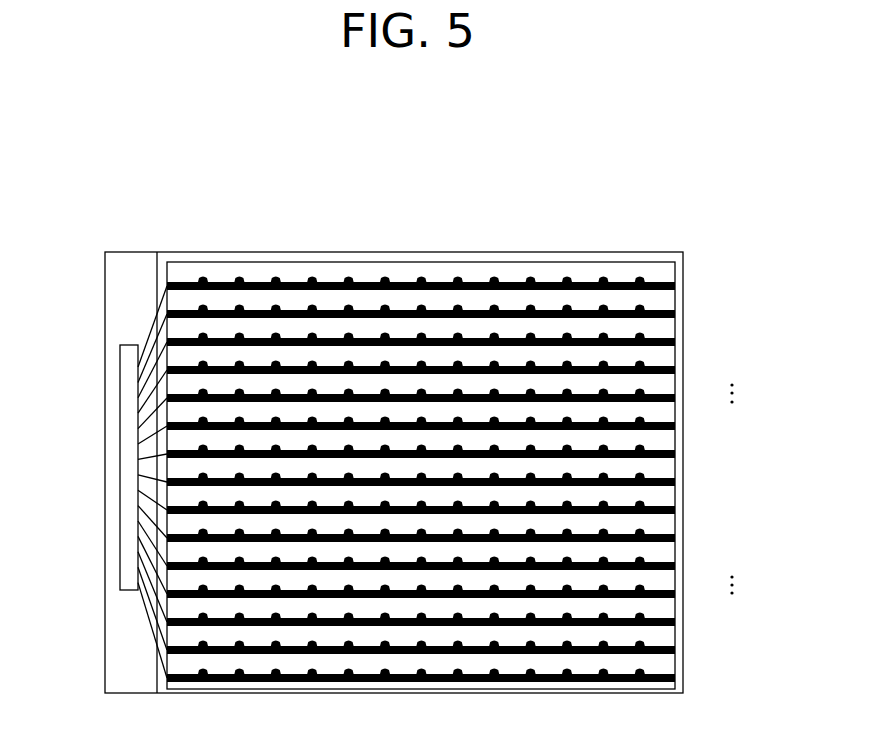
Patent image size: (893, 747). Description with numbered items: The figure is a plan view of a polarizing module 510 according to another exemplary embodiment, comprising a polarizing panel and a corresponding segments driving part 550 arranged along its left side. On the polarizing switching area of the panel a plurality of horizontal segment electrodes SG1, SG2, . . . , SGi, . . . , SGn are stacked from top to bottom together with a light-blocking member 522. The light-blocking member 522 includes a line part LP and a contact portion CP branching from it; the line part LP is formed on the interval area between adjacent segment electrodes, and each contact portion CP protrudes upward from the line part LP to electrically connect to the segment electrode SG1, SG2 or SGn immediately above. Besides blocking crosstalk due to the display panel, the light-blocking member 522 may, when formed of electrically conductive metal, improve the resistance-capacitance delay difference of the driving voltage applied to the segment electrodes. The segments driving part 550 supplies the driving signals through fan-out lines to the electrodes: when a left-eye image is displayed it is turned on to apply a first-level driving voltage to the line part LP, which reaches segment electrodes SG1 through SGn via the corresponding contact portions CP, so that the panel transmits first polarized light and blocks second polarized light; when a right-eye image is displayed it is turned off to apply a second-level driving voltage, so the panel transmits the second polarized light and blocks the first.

The polarizing module 510 is at (447, 128).
The light-blocking member 522 is at (475, 198).
The line part LP is at (398, 282).
The contact portion CP is at (456, 277).
The segments driving part 550 is at (120, 473).
The first segment electrode SG1 is at (675, 272).
The second segment electrode SG2 is at (675, 300).
The i-th segment electrode SGi is at (675, 469).
The n-th segment electrode SGn is at (673, 664).